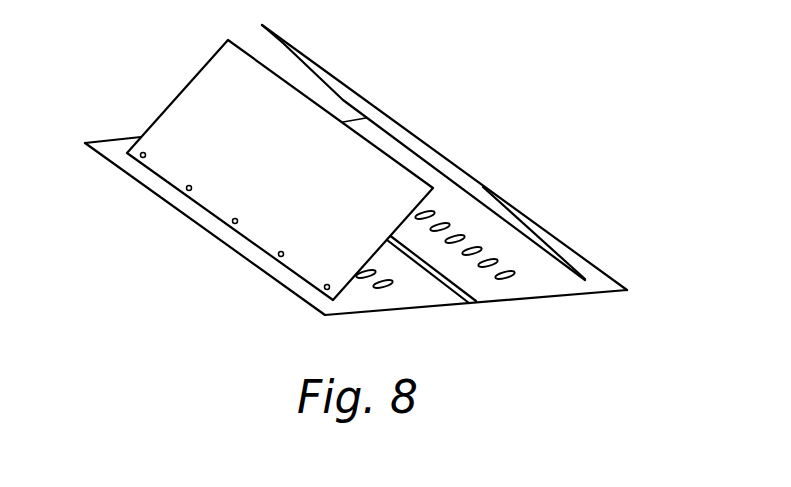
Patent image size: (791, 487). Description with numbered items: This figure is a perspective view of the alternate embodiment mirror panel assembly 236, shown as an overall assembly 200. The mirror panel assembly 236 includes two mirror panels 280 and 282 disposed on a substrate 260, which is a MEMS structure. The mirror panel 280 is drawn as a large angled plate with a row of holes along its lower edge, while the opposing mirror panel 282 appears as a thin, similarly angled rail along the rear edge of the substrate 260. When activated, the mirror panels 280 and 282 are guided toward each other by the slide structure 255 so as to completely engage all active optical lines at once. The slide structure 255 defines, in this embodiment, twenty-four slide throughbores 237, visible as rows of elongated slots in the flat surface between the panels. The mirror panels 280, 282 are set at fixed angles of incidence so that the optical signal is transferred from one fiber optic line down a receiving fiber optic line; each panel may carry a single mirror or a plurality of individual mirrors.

The assembly 200 is at (636, 246).
The mirror panel assembly 236 is at (154, 251).
The slide throughbores 237 is at (506, 276).
The slide structure 255 is at (383, 299).
The substrate 260 is at (537, 229).
The mirror panel 280 is at (184, 91).
The mirror panel 282 is at (356, 93).